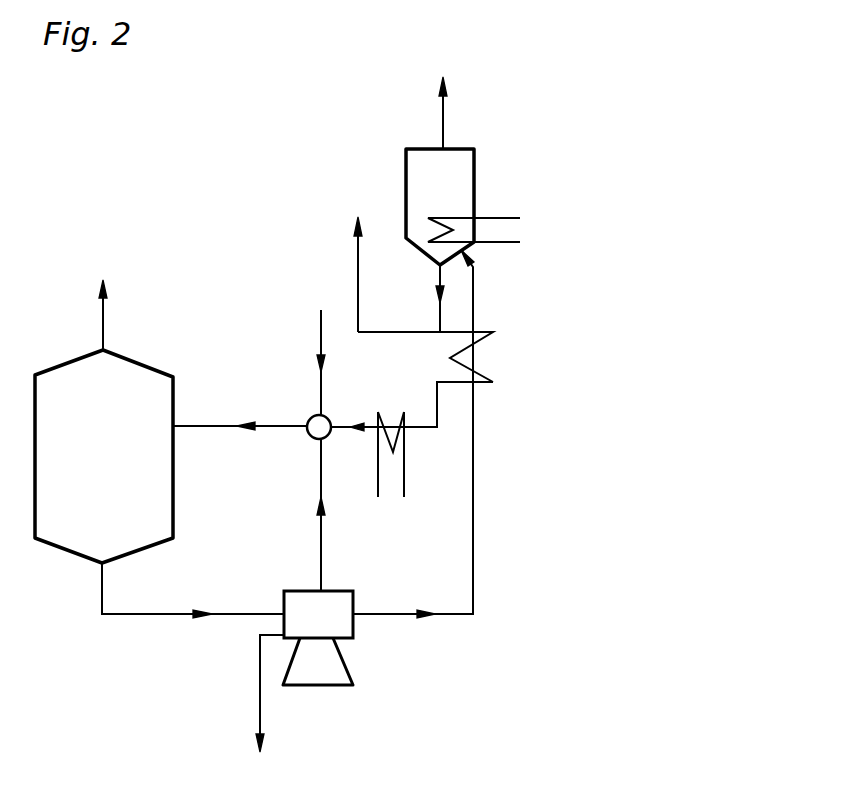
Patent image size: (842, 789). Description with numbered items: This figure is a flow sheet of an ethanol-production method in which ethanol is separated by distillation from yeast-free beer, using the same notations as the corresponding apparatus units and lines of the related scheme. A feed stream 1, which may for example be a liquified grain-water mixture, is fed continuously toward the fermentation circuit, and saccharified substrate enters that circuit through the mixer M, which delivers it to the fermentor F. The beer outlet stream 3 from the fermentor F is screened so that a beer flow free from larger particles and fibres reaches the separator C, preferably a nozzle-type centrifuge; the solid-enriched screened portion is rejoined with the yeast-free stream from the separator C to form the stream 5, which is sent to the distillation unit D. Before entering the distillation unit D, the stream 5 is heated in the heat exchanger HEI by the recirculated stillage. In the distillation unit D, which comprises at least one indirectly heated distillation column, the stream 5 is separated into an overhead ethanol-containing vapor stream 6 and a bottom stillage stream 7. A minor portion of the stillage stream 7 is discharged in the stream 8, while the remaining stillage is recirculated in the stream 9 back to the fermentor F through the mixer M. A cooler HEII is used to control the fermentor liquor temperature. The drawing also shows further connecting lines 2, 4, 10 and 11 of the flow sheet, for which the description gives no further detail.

The feed stream 1 is at (175, 617).
The compressed gas line 2 is at (445, 618).
The beer outlet stream 3 is at (438, 310).
The return line to fermenter 4 is at (273, 426).
The stream to distillation unit 5 is at (318, 548).
The overhead ethanol containing vapor stream 6 is at (317, 330).
The bottom stillage stream 7 is at (105, 330).
The discharge stream 8 is at (260, 718).
The recirculated stillage stream 9 is at (443, 130).
The line 10 is at (353, 253).
The cooling coil of separator 11 is at (497, 218).
The fermentor F is at (78, 530).
The distillation unit D is at (443, 187).
The separator C is at (338, 625).
The mixer M is at (320, 425).
The heat exchanger HEI is at (478, 348).
The cooler HEII is at (404, 473).